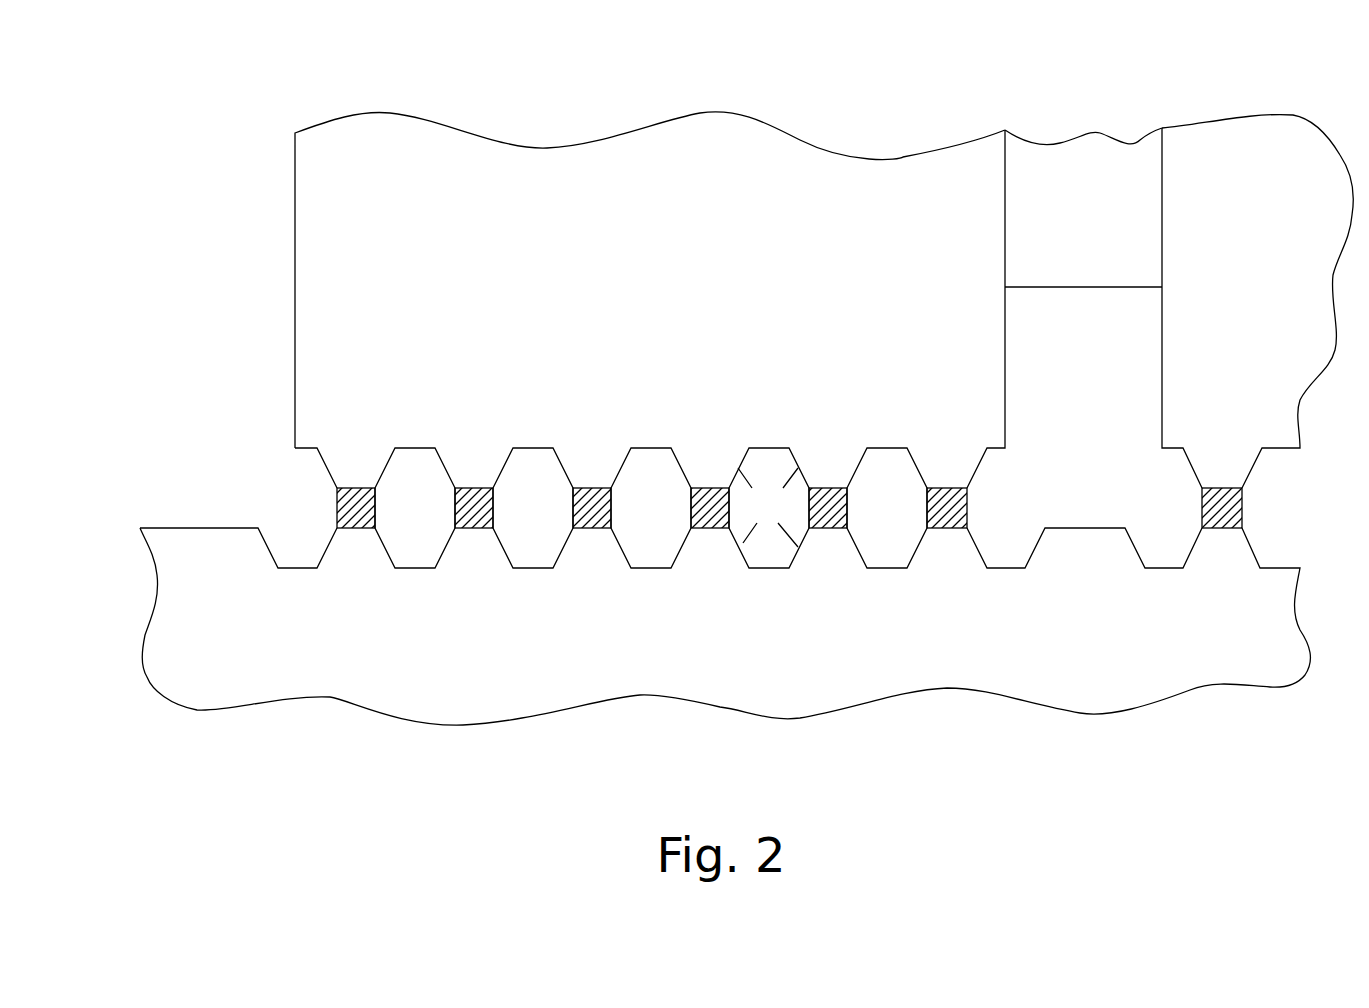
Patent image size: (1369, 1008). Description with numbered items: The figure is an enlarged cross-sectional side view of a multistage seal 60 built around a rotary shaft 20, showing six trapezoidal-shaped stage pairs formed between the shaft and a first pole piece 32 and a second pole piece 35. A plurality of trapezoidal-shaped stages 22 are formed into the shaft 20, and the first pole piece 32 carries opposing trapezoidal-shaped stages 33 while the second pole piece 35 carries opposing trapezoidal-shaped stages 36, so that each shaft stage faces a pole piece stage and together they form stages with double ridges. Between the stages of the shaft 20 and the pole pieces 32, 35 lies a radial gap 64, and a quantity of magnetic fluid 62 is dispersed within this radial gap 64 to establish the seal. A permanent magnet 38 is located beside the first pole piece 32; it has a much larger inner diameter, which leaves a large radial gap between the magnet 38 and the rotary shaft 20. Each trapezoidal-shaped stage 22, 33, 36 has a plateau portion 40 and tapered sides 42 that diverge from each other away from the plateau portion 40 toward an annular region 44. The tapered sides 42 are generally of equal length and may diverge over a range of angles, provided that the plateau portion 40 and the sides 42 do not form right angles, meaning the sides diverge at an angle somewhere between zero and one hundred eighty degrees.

The multistage seal 60 is at (207, 167).
The first pole piece 32 is at (650, 300).
The permanent magnet 38 is at (1083, 207).
The second pole piece 35 is at (1257, 301).
The shaft 20 is at (725, 626).
The trapezoidal-shaped stages 22 is at (357, 548).
The trapezoidal-shaped stages 33 is at (352, 465).
The radial gap 64 is at (315, 520).
The magnetic fluid 62 is at (572, 504).
The annular region 44 is at (647, 553).
The tapered sides 42 is at (750, 508).
The plateau portion 40 is at (823, 490).
The trapezoidal-shaped stages 36 is at (1227, 462).